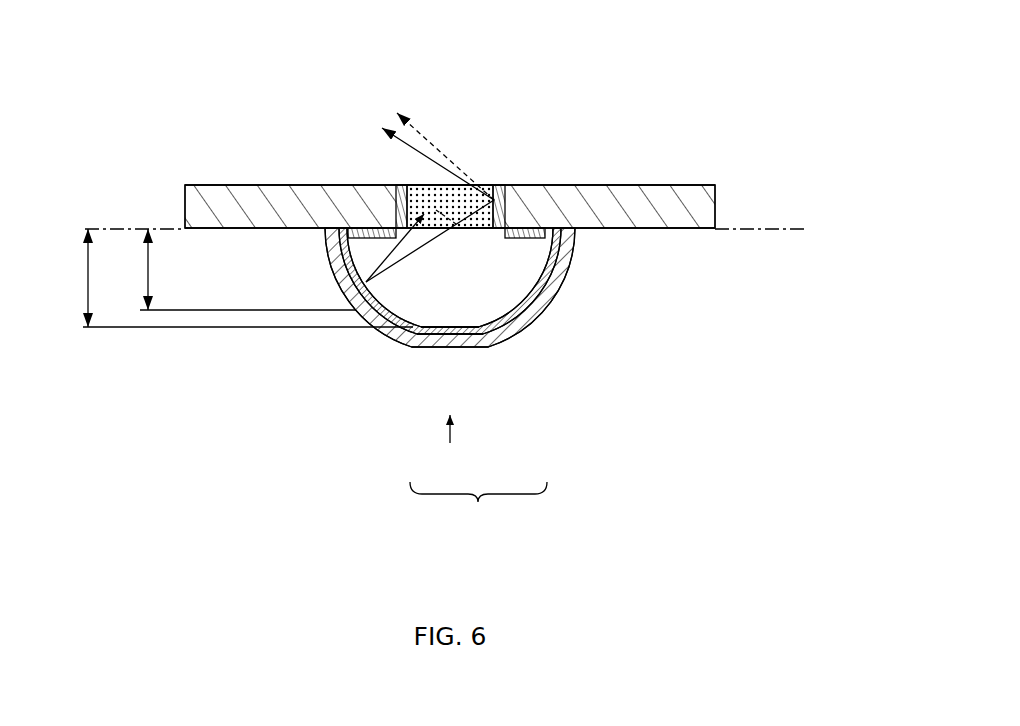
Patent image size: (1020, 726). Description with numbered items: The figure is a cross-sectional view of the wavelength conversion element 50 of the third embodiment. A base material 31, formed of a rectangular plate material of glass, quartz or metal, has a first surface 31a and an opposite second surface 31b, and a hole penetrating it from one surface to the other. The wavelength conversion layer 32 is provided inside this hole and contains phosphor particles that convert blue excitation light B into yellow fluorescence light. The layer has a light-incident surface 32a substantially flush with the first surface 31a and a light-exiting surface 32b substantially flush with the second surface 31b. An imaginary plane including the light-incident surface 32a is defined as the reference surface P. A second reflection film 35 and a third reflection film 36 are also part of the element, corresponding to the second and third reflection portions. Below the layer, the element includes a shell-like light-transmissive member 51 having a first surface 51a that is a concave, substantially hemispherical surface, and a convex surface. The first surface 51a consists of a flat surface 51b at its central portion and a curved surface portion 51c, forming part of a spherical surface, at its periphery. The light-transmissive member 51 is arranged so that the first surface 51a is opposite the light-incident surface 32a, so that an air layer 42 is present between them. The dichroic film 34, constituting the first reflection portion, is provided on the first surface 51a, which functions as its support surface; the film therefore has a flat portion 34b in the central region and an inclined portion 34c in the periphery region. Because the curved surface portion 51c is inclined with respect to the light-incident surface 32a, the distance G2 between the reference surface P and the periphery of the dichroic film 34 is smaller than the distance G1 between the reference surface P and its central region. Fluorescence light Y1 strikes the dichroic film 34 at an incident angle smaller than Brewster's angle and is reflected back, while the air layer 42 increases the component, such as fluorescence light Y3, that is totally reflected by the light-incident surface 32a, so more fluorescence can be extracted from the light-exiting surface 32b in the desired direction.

The wavelength conversion element 50 is at (318, 106).
The base material 31 is at (608, 193).
The first surface 31a is at (683, 229).
The second surface 31b is at (675, 185).
The wavelength conversion layer 32 is at (441, 196).
The light-incident surface 32a is at (481, 337).
The light-exiting surface 32b is at (491, 185).
The dichroic film 34 is at (562, 300).
The flat portion 34b is at (456, 335).
The inclined portion 34c is at (566, 268).
The second reflection film 35 is at (508, 198).
The third reflection film 36 is at (362, 232).
The air layer 42 is at (412, 290).
The light-transmissive member 51 is at (536, 320).
The first surface 51a is at (478, 508).
The flat surface 51b is at (421, 337).
The curved surface portion 51c is at (512, 337).
The reference surface P is at (768, 228).
The fluorescence light Y1 is at (392, 248).
The fluorescence light Y3 is at (397, 113).
The distance G1 is at (228, 278).
The distance G2 is at (233, 269).
The excitation light B is at (455, 437).